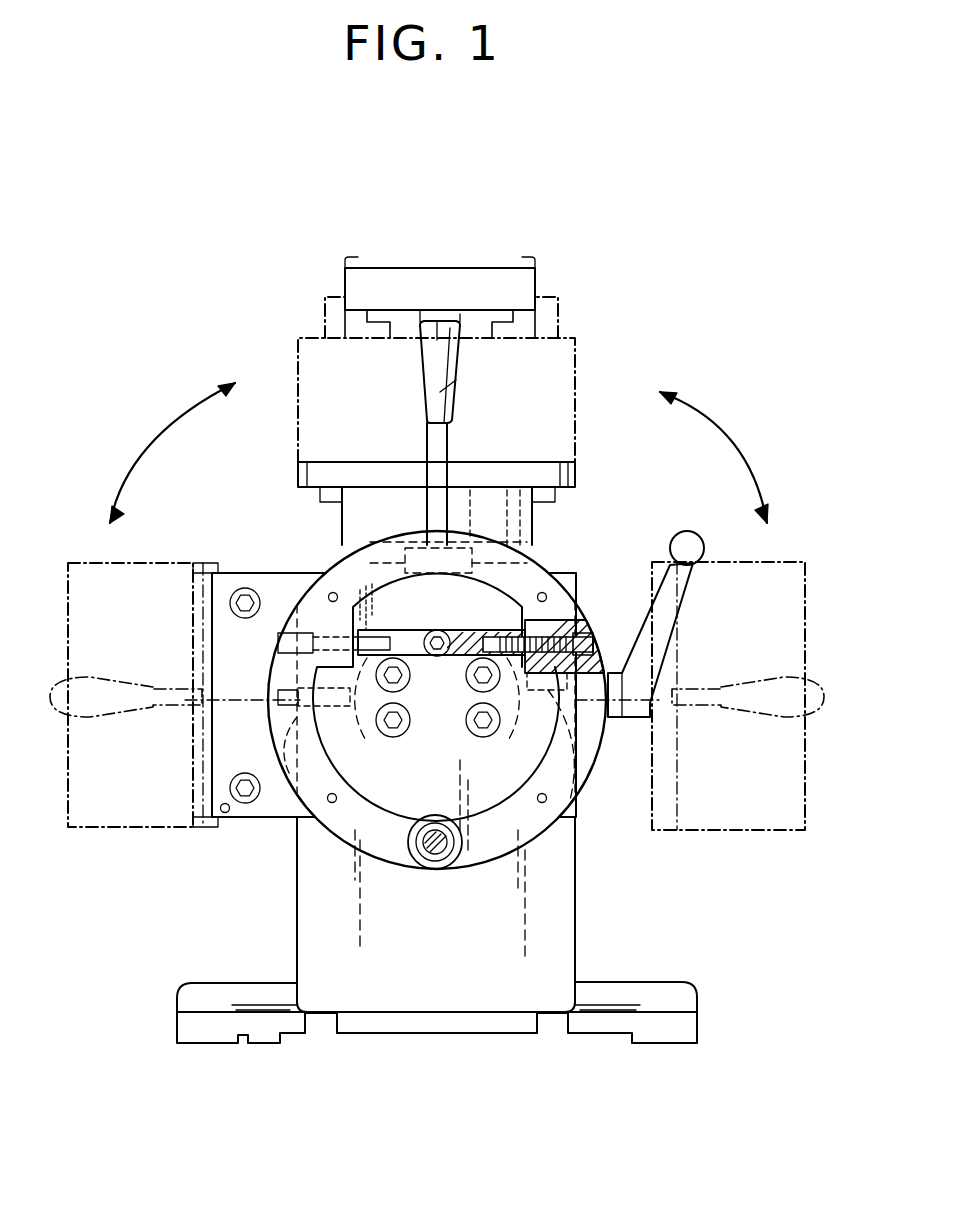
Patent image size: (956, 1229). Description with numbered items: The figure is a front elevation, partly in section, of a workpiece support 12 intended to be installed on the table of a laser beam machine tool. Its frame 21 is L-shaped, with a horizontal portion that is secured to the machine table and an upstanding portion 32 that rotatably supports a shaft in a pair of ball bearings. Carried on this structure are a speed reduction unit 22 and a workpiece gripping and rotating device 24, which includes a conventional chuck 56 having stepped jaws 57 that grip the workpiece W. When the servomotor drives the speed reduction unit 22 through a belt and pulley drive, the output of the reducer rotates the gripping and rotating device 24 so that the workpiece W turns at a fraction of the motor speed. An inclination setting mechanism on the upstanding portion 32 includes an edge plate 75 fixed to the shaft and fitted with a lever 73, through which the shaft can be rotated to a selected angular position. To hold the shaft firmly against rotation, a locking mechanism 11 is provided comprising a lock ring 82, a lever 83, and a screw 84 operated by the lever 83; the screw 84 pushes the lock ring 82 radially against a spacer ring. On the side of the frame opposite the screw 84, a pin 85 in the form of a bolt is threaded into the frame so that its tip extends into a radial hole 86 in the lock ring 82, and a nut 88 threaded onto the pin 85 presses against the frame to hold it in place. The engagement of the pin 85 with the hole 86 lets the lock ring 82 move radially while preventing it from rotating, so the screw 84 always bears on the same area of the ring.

The workpiece W is at (535, 270).
The stepped jaws 57 is at (328, 311).
The chuck 56 is at (575, 368).
The workpiece gripping and rotating device 24 is at (580, 464).
The lever 73 is at (420, 395).
The workpiece support 12 is at (252, 560).
The speed reduction unit 22 is at (281, 576).
The lever 83 is at (703, 538).
The edge plate 75 is at (592, 617).
The locking mechanism 11 is at (611, 665).
The pin 85 is at (276, 697).
The nut 88 is at (280, 743).
The radial hole 86 is at (370, 746).
The screw 84 is at (590, 742).
The lock ring 82 is at (576, 787).
The upstanding portion 32 is at (576, 890).
The frame 21 is at (625, 976).